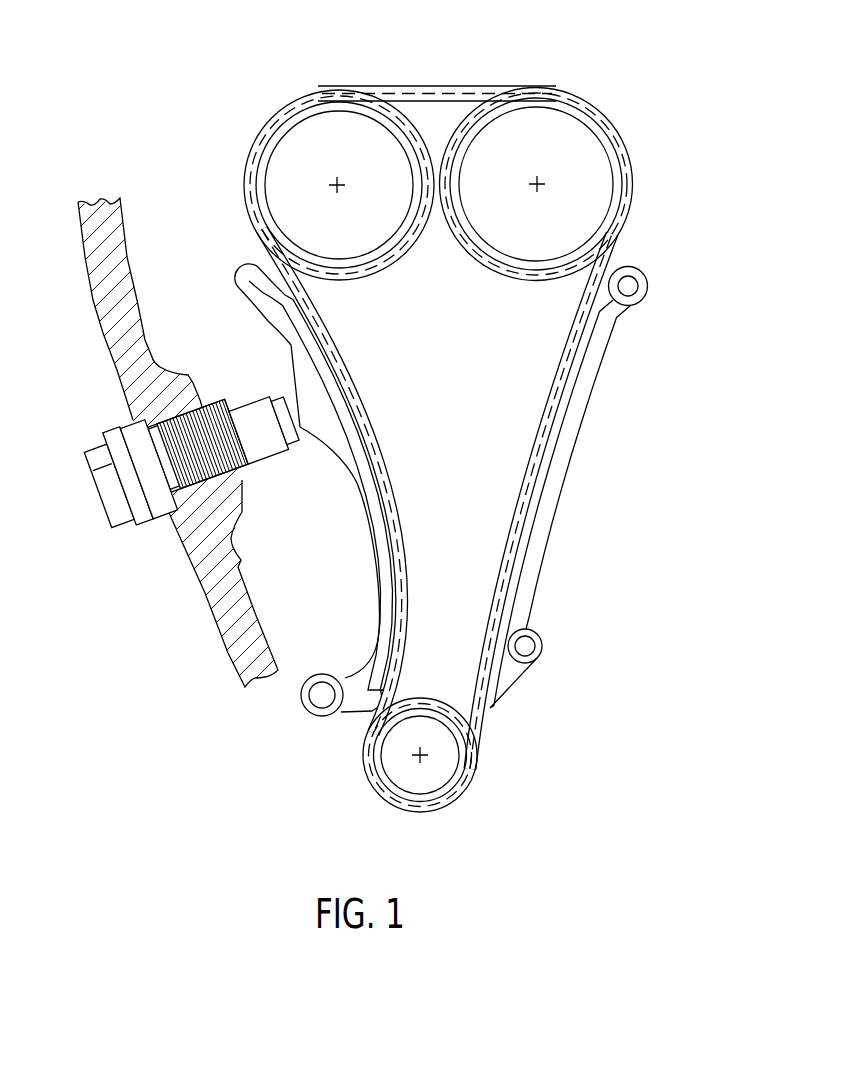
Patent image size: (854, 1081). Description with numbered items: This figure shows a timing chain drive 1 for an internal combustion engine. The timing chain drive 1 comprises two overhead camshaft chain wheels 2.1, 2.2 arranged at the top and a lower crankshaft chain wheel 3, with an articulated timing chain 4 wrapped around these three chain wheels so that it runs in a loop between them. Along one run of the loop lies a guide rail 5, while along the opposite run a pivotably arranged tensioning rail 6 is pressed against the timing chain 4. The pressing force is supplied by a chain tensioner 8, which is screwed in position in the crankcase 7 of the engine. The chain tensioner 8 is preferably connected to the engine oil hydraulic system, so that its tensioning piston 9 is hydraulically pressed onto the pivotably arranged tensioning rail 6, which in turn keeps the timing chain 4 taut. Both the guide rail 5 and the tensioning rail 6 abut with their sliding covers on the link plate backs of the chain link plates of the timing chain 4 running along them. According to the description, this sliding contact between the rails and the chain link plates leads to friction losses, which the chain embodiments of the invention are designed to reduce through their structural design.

The timing chain drive 1 is at (410, 441).
The overhead camshaft chain wheel 2.1 is at (313, 126).
The overhead camshaft chain wheel 2.2 is at (600, 143).
The lower crankshaft chain wheel 3 is at (430, 778).
The timing chain 4 is at (447, 84).
The guide rail 5 is at (560, 510).
The tensioning rail 6 is at (256, 313).
The crankcase 7 is at (107, 311).
The chain tensioner 8 is at (126, 543).
The tensioning piston 9 is at (298, 440).